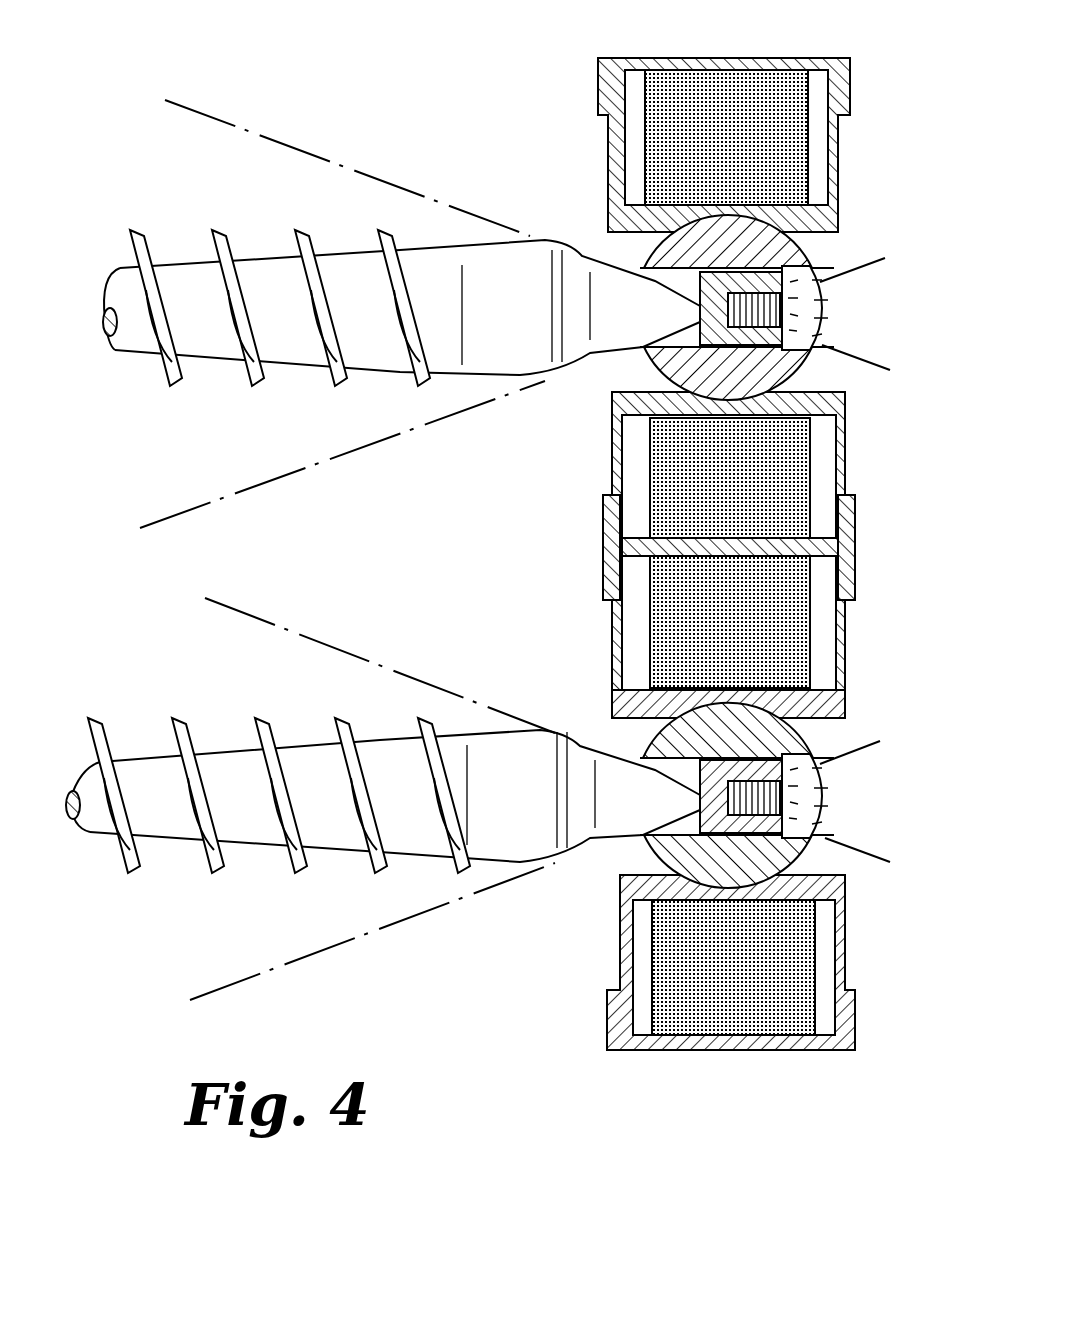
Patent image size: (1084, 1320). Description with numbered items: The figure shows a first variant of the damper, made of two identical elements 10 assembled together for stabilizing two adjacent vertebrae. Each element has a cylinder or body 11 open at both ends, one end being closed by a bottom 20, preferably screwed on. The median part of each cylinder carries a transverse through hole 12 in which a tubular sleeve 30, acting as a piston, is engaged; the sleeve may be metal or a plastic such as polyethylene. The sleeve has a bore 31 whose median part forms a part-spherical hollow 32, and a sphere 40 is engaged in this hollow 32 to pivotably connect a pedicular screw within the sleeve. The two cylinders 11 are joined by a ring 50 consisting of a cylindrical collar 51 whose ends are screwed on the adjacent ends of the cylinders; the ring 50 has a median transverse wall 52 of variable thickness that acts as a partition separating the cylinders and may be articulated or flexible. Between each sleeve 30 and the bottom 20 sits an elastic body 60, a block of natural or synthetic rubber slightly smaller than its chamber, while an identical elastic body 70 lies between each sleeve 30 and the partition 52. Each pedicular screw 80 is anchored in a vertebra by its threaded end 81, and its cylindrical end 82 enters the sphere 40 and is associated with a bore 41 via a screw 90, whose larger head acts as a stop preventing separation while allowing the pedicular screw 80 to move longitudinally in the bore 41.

The element 10 is at (764, 562).
The cylinder 11 is at (615, 158).
The transverse through hole 12 is at (633, 375).
The bottom 20 is at (637, 60).
The tubular sleeve 30 is at (693, 520).
The bore 31 is at (622, 247).
The hollow 32 is at (836, 215).
The sphere 40 is at (823, 357).
The bore 41 is at (743, 350).
The ring 50 is at (691, 555).
The cylindrical collar 51 is at (850, 522).
The median transverse wall 52 is at (783, 540).
The elastic body 60 is at (779, 125).
The elastic body 70 is at (680, 515).
The pedicular screw 80 is at (383, 594).
The threaded end 81 is at (272, 342).
The cylindrical end 82 is at (657, 310).
The screw 90 is at (826, 330).